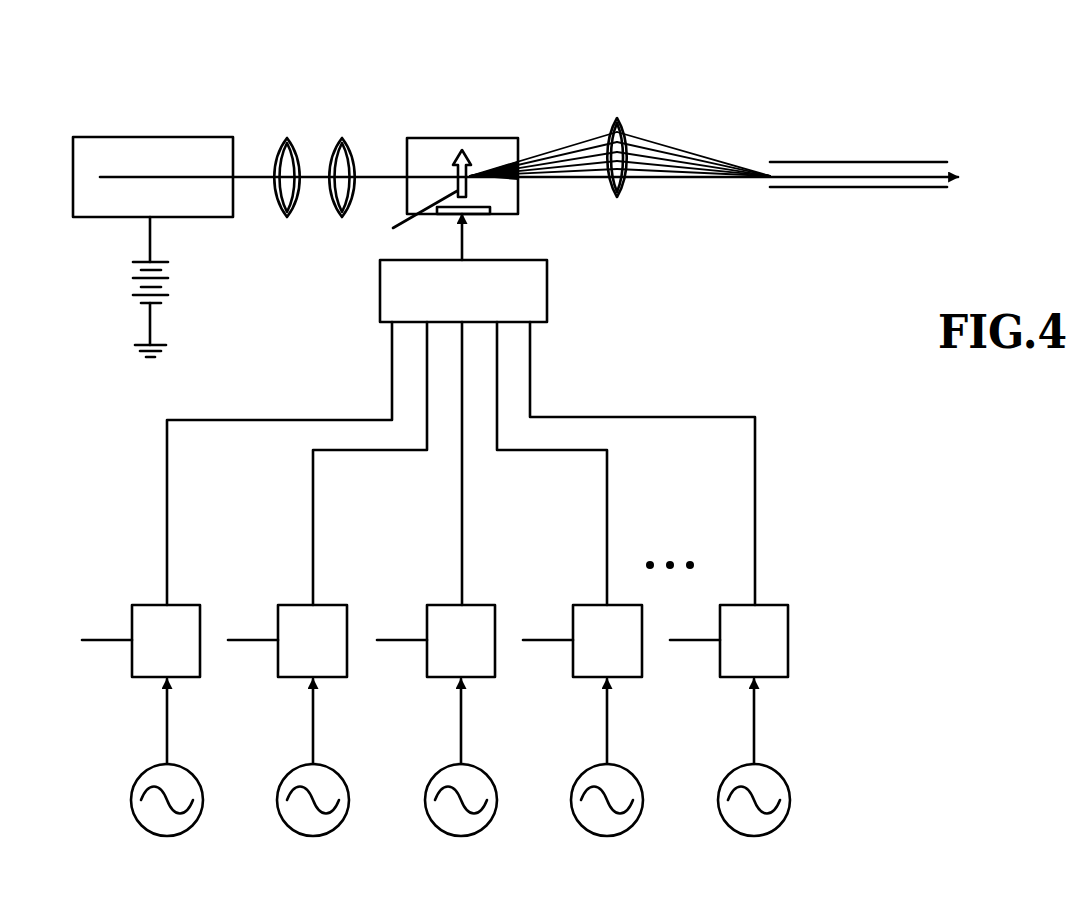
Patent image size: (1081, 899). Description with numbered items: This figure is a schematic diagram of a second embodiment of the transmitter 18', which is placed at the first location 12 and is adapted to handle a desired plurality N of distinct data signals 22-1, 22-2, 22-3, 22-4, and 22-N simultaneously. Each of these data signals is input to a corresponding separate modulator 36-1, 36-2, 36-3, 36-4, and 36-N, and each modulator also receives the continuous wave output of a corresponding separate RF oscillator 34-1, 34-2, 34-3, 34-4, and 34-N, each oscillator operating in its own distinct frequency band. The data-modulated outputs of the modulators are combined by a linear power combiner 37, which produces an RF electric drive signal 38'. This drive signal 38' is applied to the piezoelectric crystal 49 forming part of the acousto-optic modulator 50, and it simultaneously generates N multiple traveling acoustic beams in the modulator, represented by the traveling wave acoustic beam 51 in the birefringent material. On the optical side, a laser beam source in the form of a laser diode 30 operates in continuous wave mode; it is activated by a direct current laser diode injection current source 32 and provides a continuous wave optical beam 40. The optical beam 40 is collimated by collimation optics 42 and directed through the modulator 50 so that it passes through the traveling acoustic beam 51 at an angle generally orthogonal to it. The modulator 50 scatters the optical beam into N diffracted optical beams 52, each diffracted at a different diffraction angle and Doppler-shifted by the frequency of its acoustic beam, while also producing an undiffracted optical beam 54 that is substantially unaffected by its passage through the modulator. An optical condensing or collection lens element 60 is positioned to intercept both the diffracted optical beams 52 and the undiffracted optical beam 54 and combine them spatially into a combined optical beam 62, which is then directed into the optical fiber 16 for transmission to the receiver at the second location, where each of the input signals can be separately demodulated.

The first location 12 is at (154, 100).
The optical fiber 16 is at (858, 188).
The transmitter 18' is at (111, 431).
The data signal 22-1 is at (105, 642).
The data signal 22-2 is at (253, 642).
The data signal 22-3 is at (402, 642).
The data signal 22-4 is at (547, 642).
The data signal 22-N is at (695, 642).
The laser diode 30 is at (153, 137).
The direct current laser diode injection current source 32 is at (165, 262).
The RF oscillator 34-1 is at (132, 793).
The RF oscillator 34-2 is at (278, 797).
The RF oscillator 34-3 is at (425, 797).
The RF oscillator 34-4 is at (573, 793).
The RF oscillator 34-N is at (718, 793).
The modulator 36-1 is at (133, 603).
The modulator 36-2 is at (278, 605).
The modulator 36-3 is at (427, 605).
The modulator 36-4 is at (573, 605).
The modulator 36-N is at (790, 603).
The linear power combiner 37 is at (547, 292).
The RF electric drive signal 38' is at (512, 237).
The continuous wave optical beam 40 is at (256, 175).
The collimation optics 42 is at (343, 138).
The piezoelectric crystal 49 is at (487, 208).
The acousto-optic modulator 50 is at (463, 138).
The traveling wave acoustic beam 51 is at (413, 223).
The diffracted optical beams 52 is at (542, 153).
The undiffracted optical beam 54 is at (567, 177).
The collection lens element 60 is at (620, 197).
The combined optical beam 62 is at (787, 177).